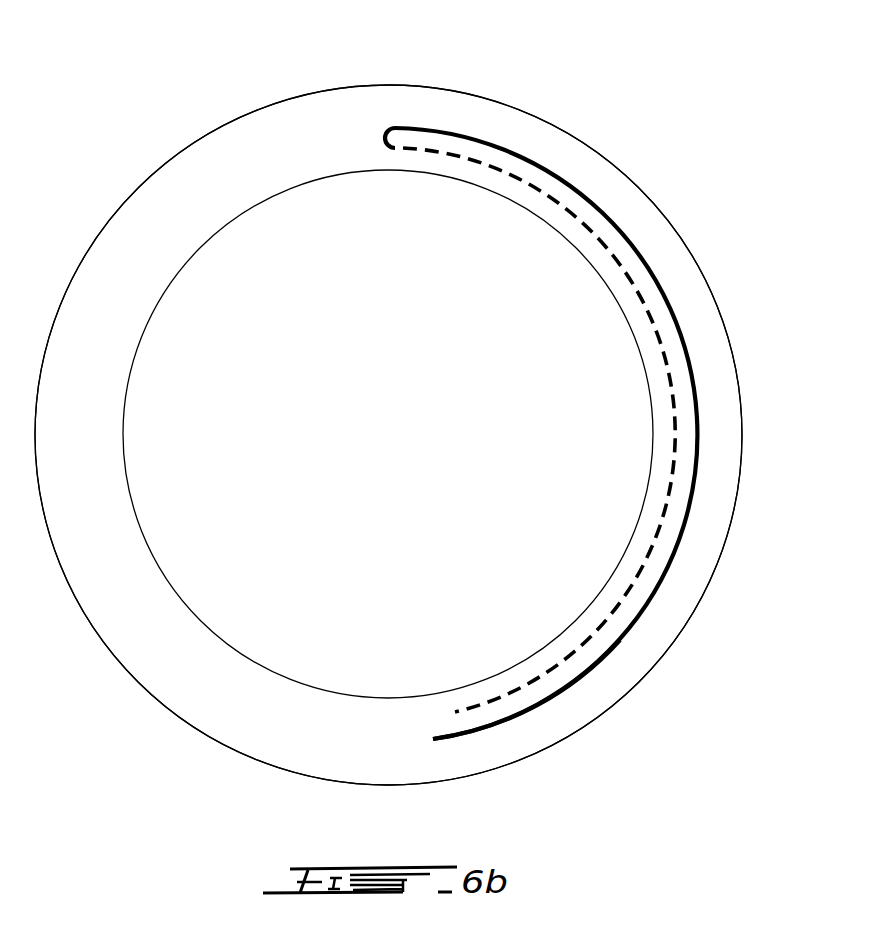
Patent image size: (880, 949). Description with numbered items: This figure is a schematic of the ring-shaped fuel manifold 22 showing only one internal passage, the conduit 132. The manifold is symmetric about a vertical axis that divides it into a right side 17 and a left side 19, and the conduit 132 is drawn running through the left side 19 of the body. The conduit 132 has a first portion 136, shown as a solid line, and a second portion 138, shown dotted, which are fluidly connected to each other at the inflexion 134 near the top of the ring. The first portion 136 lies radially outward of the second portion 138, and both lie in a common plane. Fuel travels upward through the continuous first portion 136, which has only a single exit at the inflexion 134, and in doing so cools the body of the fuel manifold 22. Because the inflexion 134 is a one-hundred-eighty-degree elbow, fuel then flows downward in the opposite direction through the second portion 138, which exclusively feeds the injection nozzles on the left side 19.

The right side 17 is at (100, 640).
The left side 19 is at (608, 710).
The fuel manifold 22 is at (92, 246).
The conduit 132 is at (703, 357).
The inflexion 134 is at (388, 140).
The first portion 136 is at (642, 613).
The second portion 138 is at (578, 648).